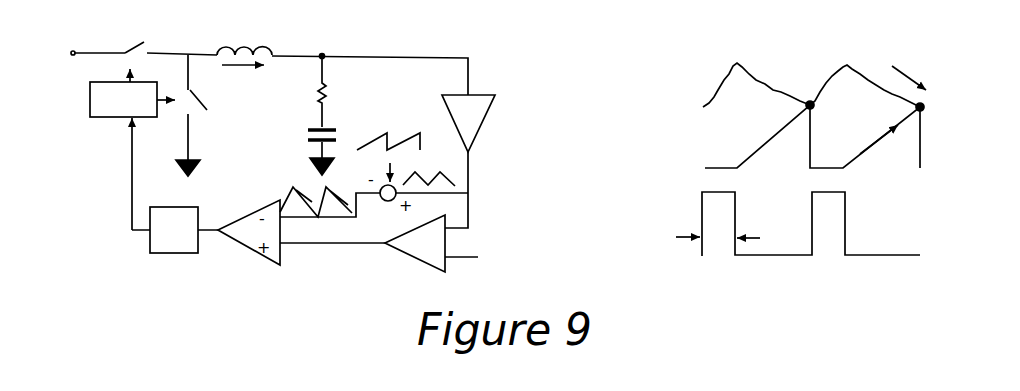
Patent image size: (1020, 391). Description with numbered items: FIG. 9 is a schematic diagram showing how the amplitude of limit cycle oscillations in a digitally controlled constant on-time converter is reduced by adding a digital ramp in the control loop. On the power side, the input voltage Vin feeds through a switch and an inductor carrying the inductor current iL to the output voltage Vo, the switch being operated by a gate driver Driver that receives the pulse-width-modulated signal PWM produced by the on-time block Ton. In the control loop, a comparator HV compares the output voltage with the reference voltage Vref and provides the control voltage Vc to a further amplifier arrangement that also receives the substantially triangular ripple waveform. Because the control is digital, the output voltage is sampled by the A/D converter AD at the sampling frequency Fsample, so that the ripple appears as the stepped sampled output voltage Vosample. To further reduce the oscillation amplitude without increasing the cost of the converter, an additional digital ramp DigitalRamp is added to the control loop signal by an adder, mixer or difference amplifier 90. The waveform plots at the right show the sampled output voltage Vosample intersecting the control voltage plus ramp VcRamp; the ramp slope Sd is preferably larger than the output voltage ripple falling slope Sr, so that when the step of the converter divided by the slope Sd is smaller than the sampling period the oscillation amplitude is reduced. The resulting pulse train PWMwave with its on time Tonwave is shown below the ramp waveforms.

The difference amplifier 90 is at (382, 201).
The input voltage Vin is at (98, 35).
The inductor current iL is at (209, 42).
The output voltage Vo is at (370, 57).
The gate driver Driver is at (132, 93).
The PWM signal PWM is at (97, 174).
The on-time block Ton is at (175, 230).
The digital ramp DigitalRamp is at (388, 129).
The A/D converter AD is at (468, 123).
The sampling frequency Fsample is at (496, 190).
The comparator HV is at (415, 243).
The reference voltage Vref is at (482, 264).
The control voltage Vc is at (332, 260).
The sampled output voltage Vosample is at (762, 85).
The Vc plus ramp VcRamp is at (755, 141).
The digital ramp slope Sd is at (870, 128).
The ramp rising slope Sr is at (908, 68).
The PWM waveform PWMwave is at (767, 224).
The on time Tonwave is at (759, 222).